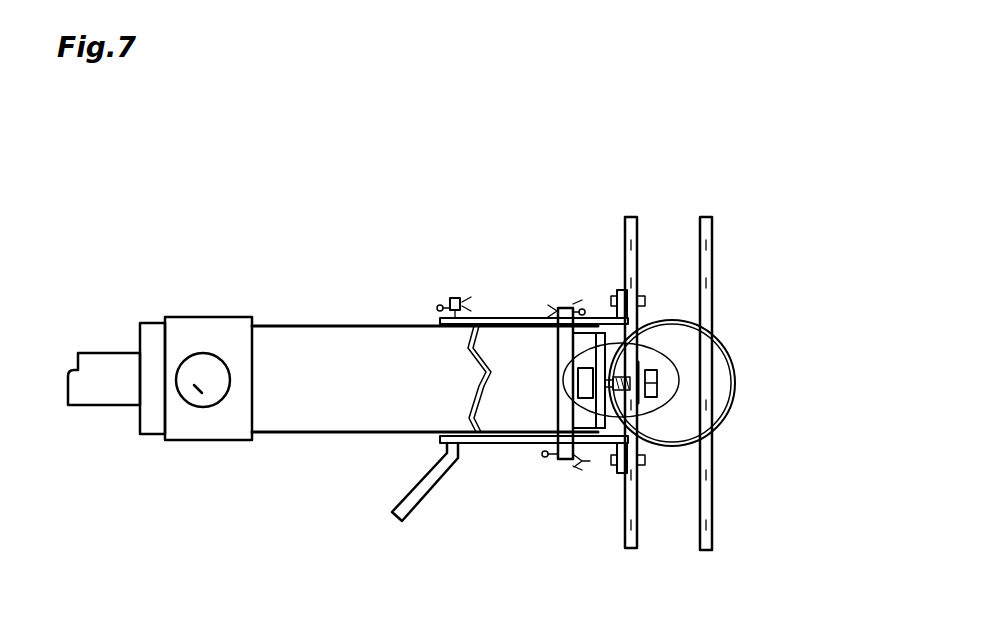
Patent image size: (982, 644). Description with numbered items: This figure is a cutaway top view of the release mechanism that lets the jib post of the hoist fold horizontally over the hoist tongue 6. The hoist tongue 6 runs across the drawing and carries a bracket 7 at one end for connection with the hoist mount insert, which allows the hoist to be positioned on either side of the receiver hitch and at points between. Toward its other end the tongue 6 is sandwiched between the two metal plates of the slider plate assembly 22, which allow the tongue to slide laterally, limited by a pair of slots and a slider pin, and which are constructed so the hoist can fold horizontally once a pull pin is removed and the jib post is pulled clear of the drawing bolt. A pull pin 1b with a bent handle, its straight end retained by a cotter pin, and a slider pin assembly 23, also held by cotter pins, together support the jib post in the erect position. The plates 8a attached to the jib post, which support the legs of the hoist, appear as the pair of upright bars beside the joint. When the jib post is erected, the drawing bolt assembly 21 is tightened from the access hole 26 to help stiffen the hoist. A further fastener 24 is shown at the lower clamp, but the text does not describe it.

The bracket 7 is at (205, 317).
The hoist tongue 6 is at (275, 322).
The pull pin 1b is at (455, 298).
The slider plate assembly 22 is at (503, 318).
The slider pin assembly 23 is at (567, 308).
The plates 8a is at (700, 265).
The drawing bolt assembly 21 is at (679, 380).
The access hole 26 is at (736, 395).
The bolt 24 is at (605, 470).